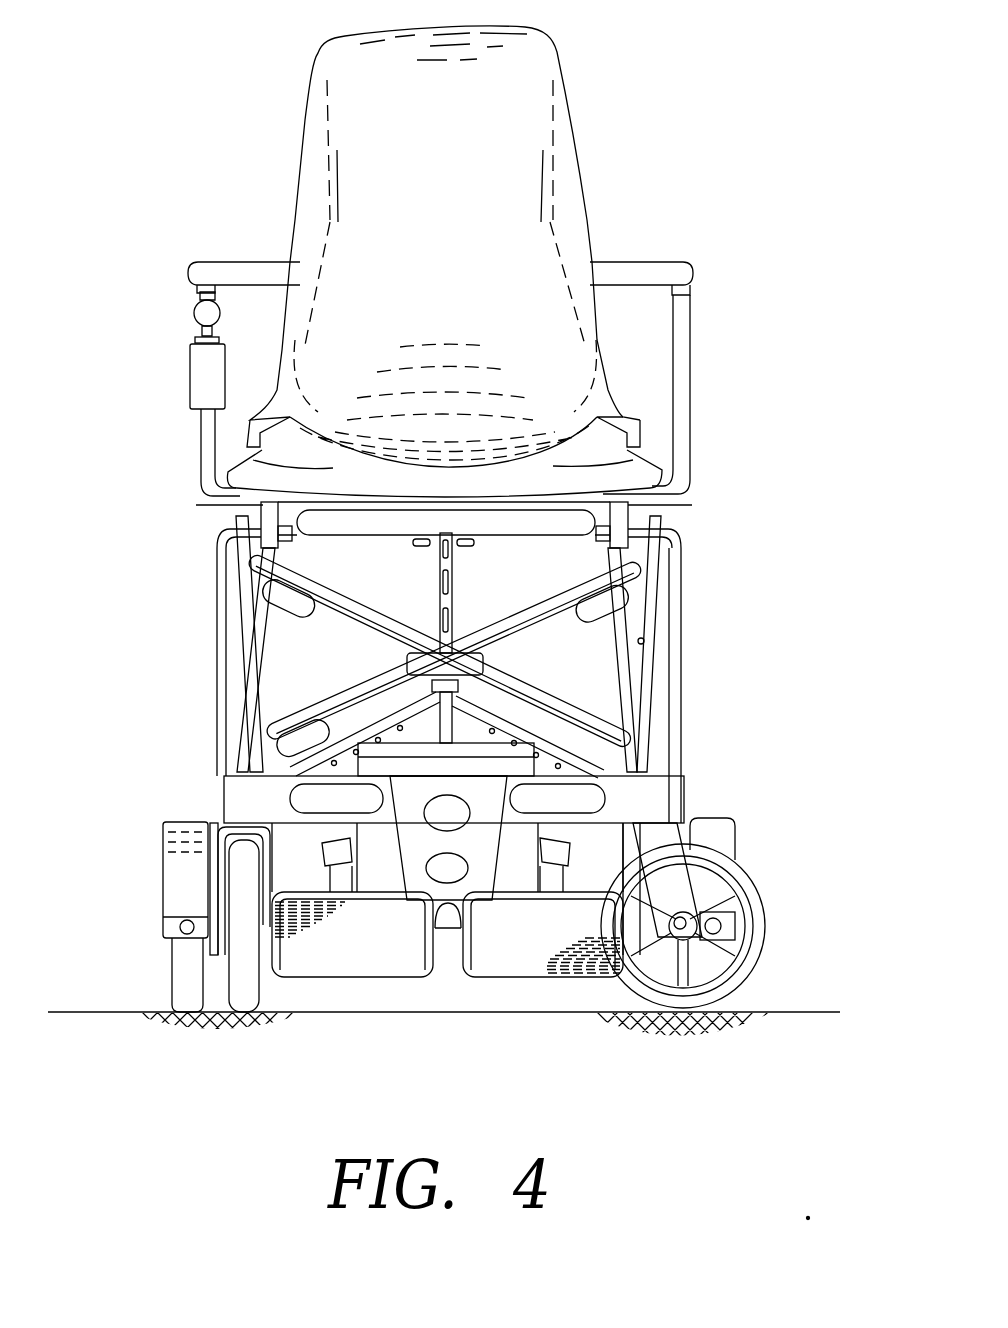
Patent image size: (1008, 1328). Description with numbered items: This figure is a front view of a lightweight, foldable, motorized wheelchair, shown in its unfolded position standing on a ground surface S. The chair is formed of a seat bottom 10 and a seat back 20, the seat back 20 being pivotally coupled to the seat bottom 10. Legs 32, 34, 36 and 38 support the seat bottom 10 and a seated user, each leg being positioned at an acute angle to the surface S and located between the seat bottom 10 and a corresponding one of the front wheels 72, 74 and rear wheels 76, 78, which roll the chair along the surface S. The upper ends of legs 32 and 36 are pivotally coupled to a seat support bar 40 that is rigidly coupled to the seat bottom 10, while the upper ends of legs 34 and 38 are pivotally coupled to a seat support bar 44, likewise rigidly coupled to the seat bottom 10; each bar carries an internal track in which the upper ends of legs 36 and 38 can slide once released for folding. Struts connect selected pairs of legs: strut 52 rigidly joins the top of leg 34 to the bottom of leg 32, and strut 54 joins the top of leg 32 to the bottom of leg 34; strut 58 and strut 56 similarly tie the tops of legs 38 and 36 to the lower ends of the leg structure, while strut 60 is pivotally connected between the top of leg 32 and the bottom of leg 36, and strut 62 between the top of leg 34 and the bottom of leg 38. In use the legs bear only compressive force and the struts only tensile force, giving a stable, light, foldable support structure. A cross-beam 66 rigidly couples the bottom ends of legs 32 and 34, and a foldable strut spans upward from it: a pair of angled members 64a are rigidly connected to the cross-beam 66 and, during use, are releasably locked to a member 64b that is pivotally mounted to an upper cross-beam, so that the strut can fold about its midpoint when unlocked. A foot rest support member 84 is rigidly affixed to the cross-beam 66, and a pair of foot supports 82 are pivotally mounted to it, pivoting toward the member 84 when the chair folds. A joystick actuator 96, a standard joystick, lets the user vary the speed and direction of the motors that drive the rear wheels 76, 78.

The seat bottom 10 is at (633, 473).
The seat back 20 is at (530, 73).
The leg 32 is at (640, 615).
The leg 34 is at (246, 587).
The leg 36 is at (652, 748).
The leg 38 is at (247, 737).
The seat support bar 40 is at (620, 510).
The seat support bar 44 is at (270, 510).
The strut 52 is at (300, 737).
The strut 54 is at (642, 642).
The strut 56 is at (560, 602).
The strut 58 is at (300, 620).
The strut 60 is at (673, 762).
The strut 62 is at (222, 757).
The angled member 64a is at (293, 770).
The member 64b is at (452, 598).
The cross-beam 66 is at (623, 798).
The front wheel 72 is at (765, 922).
The front wheel 74 is at (245, 990).
The rear wheel 76 is at (720, 835).
The rear wheel 78 is at (185, 962).
The foot support 82 is at (378, 943).
The foot rest support member 84 is at (455, 895).
The joystick actuator 96 is at (200, 385).
The ground surface S is at (840, 1012).